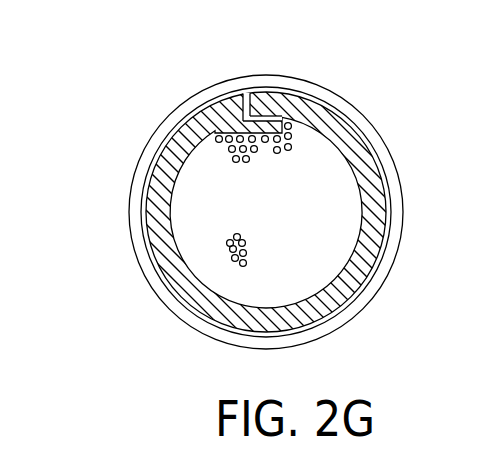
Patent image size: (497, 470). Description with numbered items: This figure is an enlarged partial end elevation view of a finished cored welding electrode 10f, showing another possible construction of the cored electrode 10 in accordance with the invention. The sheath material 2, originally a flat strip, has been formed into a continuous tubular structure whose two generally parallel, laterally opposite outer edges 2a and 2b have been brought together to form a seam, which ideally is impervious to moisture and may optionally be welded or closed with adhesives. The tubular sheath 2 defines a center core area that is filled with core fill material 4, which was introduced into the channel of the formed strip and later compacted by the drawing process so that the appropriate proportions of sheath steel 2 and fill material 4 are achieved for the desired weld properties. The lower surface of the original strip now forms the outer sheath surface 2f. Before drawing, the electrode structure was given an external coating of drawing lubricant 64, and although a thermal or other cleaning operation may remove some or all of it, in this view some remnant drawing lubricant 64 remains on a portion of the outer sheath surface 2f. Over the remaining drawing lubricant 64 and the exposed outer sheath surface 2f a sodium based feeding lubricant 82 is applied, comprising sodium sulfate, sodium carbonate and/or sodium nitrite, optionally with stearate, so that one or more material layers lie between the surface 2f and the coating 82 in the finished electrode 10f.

The finished cored welding electrode 10f is at (118, 200).
The cored electrode 10 is at (345, 116).
The sodium based feeding lubricant 82 is at (135, 253).
The drawing lubricant 64 is at (175, 317).
The sheath strip 2 is at (372, 284).
The outer surface 2f is at (167, 145).
The outer edge 2a is at (272, 114).
The outer edge 2b is at (247, 98).
The fill material 4 is at (293, 141).